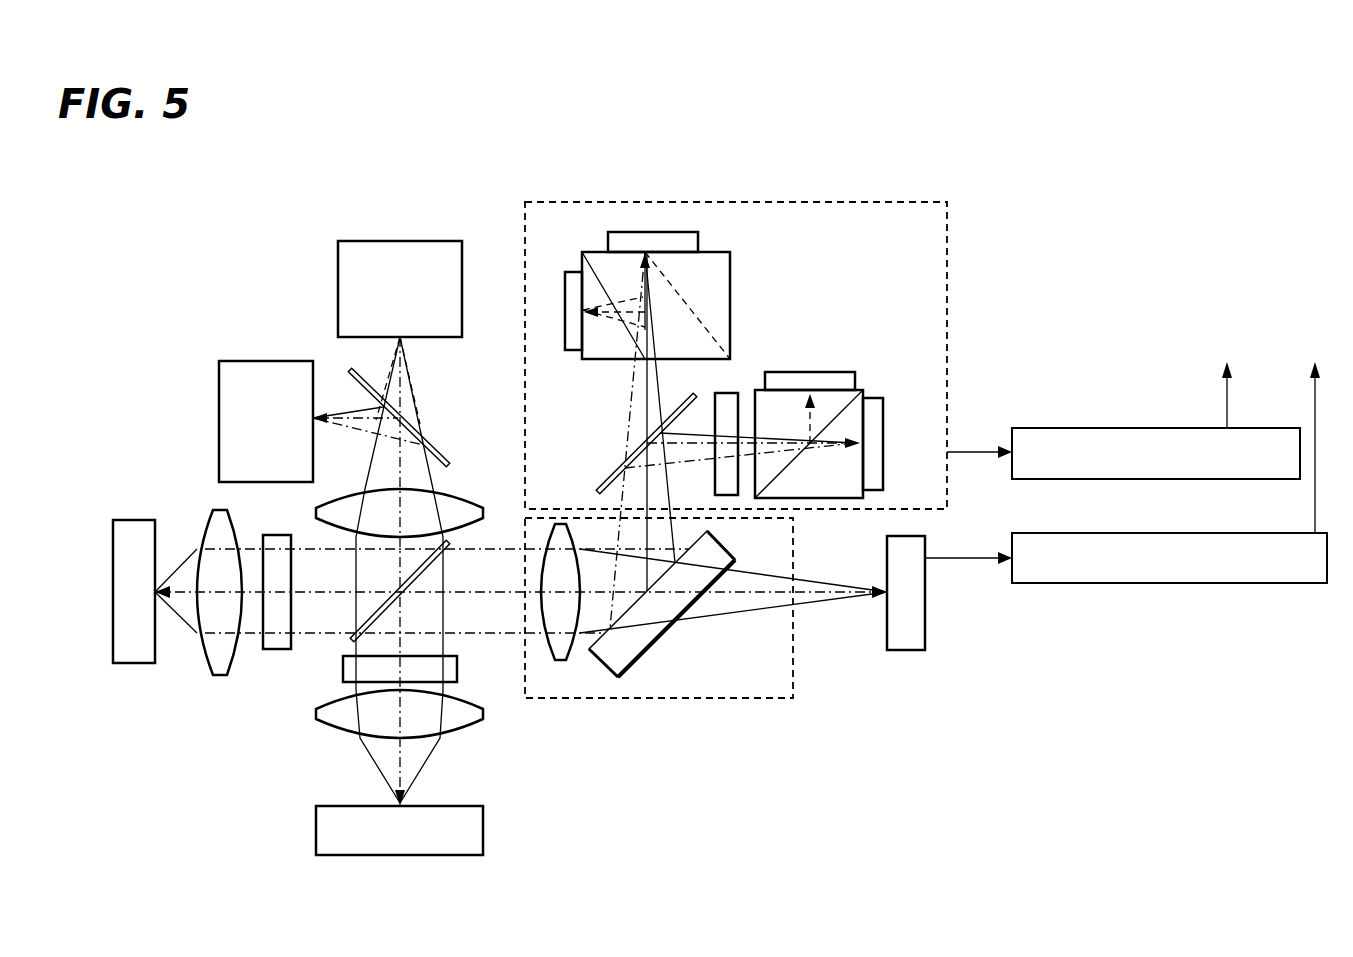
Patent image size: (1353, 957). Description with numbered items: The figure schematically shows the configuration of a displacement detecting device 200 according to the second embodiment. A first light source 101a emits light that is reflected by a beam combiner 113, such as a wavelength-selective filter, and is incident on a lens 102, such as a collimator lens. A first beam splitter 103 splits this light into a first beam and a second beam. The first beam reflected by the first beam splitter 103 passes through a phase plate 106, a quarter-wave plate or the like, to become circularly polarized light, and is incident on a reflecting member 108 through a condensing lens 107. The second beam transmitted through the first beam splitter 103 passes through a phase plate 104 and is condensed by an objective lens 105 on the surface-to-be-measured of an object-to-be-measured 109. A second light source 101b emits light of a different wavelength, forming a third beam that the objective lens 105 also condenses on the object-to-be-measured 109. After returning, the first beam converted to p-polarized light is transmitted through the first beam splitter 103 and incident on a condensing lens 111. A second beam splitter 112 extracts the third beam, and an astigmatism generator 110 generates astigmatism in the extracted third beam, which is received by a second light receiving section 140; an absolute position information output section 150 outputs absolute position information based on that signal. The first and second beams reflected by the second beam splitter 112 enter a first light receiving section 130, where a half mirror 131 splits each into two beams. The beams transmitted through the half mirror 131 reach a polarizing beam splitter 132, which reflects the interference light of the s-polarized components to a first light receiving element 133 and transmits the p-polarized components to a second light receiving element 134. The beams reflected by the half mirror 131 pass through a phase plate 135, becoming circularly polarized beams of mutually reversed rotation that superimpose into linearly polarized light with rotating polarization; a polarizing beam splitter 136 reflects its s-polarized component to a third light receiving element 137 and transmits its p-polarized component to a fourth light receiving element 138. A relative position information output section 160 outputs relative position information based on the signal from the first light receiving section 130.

The displacement detecting device 200 is at (147, 188).
The first light source 101a is at (219, 407).
The second light source 101b is at (418, 228).
The lens 102 is at (445, 493).
The first beam splitter 103 is at (350, 642).
The phase plate 104 is at (457, 668).
The objective lens 105 is at (465, 735).
The phase plate 106 is at (277, 540).
The condensing lens 107 is at (218, 510).
The reflecting member 108 is at (134, 527).
The object-to-be-measured 109 is at (483, 830).
The astigmatism generator 110 is at (790, 698).
The condensing lens 111 is at (560, 662).
The second beam splitter 112 is at (618, 678).
The beam combiner 113 is at (350, 370).
The first light receiving section 130 is at (870, 201).
The half mirror 131 is at (615, 470).
The polarizing beam splitter 132 is at (708, 252).
The first light receiving element 133 is at (565, 310).
The second light receiving element 134 is at (650, 232).
The phase plate 135 is at (727, 393).
The polarizing beam splitter 136 is at (863, 390).
The third light receiving element 137 is at (805, 372).
The fourth light receiving element 138 is at (883, 440).
The second light receiving section 140 is at (920, 622).
The absolute position information output section 150 is at (1170, 533).
The relative position information output section 160 is at (1130, 428).